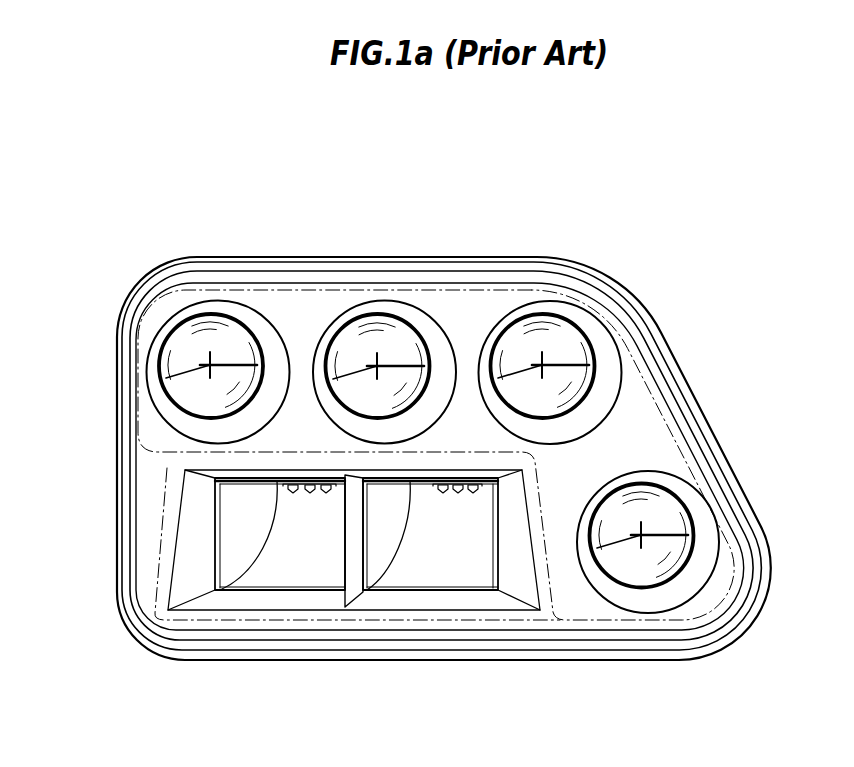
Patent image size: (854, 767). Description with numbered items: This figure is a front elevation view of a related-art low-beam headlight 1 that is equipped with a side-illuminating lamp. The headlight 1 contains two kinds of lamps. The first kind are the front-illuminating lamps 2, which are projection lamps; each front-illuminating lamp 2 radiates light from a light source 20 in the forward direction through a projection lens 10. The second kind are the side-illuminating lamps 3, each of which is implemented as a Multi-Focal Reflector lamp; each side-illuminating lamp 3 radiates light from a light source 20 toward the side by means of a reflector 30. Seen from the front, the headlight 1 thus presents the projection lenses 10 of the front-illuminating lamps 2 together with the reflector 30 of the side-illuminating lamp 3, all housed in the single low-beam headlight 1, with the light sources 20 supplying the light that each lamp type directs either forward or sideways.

The low-beam headlight 1 is at (556, 230).
The front-illuminating lamp 2 is at (436, 292).
The side-illuminating lamp 3 is at (160, 562).
The projection lens 10 is at (560, 367).
The light source 20 is at (310, 490).
The reflector 30 is at (273, 547).